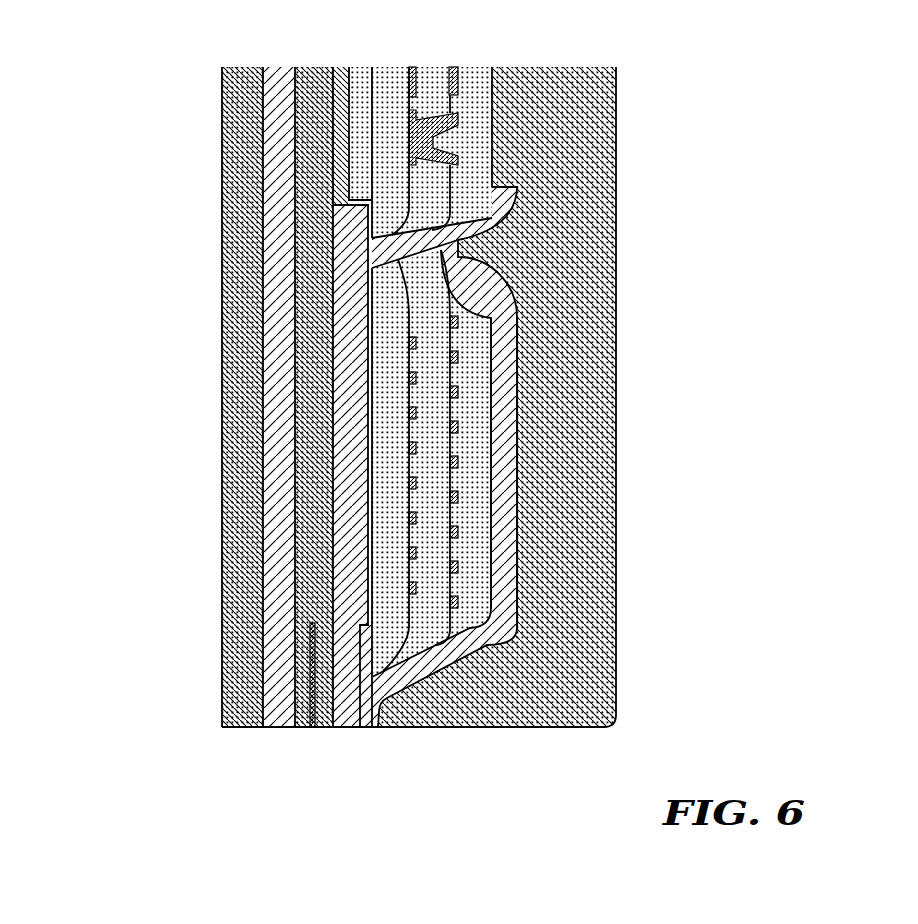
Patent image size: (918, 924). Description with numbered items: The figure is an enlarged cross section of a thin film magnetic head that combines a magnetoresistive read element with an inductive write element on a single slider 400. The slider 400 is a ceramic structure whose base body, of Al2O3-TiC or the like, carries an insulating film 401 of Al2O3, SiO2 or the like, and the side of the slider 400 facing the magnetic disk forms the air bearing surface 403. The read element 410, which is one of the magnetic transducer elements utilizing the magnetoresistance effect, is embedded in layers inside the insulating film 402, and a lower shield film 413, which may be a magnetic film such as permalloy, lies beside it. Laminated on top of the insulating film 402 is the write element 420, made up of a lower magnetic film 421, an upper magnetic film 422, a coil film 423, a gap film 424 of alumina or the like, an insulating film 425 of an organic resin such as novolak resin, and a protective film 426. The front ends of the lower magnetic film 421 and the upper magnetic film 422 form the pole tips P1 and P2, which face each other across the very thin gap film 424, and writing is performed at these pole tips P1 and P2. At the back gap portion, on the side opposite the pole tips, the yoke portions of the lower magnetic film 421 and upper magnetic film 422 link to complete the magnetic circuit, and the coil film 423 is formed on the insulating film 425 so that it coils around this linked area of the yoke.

The slider 400 is at (205, 608).
The insulating film 401 is at (231, 79).
The insulating film 402 is at (310, 64).
The air bearing surface 403 is at (247, 727).
The read element 410 is at (311, 693).
The lower shield film 413 is at (290, 558).
The write element 420 is at (486, 648).
The lower magnetic film 421 is at (334, 393).
The upper magnetic film 422 is at (518, 393).
The coil film 423 is at (458, 427).
The gap film 424 is at (370, 507).
The insulating film 425 is at (478, 503).
The protective film 426 is at (553, 265).
The pole tip P1 is at (352, 712).
The pole tip P2 is at (383, 716).